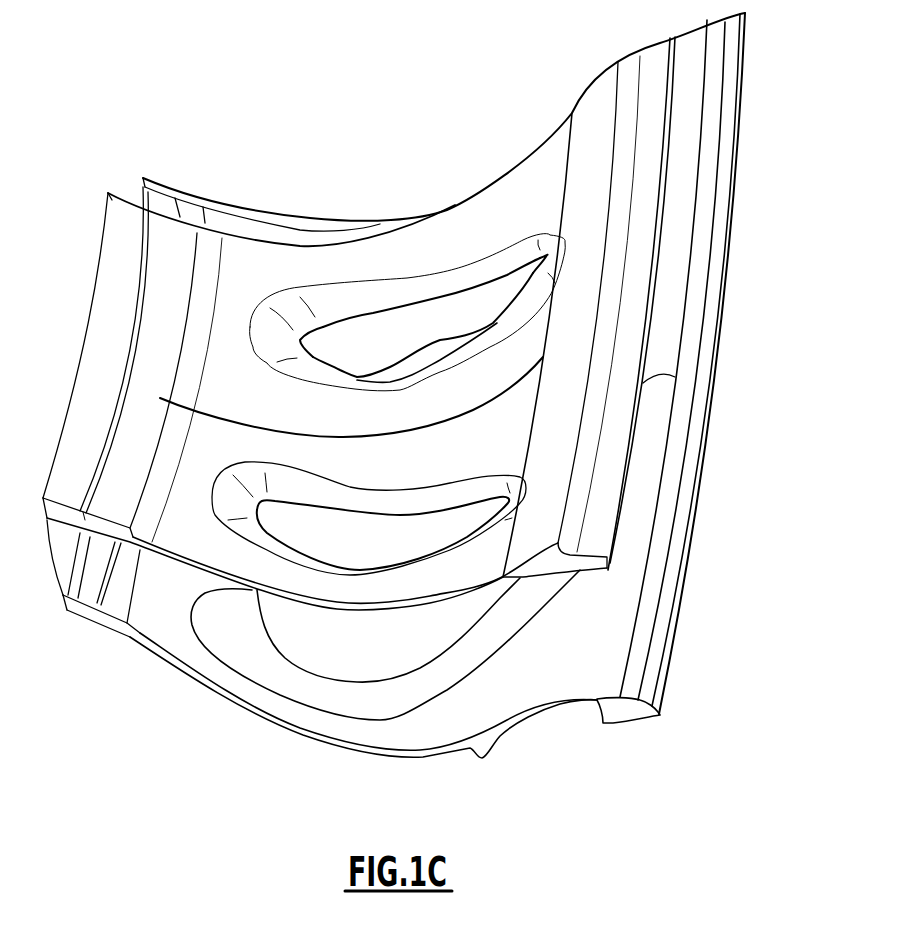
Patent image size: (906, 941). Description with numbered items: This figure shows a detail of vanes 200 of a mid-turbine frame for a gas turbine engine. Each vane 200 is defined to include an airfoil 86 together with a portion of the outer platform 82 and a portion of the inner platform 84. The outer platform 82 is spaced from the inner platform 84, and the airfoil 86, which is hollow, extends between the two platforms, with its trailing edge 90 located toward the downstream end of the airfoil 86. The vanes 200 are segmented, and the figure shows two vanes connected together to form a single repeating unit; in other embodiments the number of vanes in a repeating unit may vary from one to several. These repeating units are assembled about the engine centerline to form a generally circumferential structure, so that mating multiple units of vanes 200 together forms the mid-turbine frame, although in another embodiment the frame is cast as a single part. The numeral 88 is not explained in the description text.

The outer platform 82 is at (207, 688).
The inner platform 84 is at (322, 268).
The airfoil 86 is at (412, 327).
The leading edge 88 is at (327, 347).
The trailing edge 90 is at (547, 255).
The vane 200 is at (540, 177).